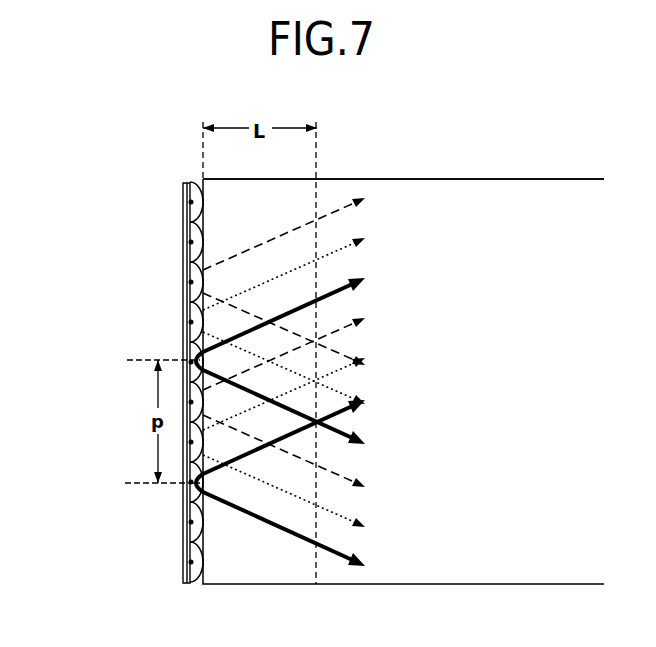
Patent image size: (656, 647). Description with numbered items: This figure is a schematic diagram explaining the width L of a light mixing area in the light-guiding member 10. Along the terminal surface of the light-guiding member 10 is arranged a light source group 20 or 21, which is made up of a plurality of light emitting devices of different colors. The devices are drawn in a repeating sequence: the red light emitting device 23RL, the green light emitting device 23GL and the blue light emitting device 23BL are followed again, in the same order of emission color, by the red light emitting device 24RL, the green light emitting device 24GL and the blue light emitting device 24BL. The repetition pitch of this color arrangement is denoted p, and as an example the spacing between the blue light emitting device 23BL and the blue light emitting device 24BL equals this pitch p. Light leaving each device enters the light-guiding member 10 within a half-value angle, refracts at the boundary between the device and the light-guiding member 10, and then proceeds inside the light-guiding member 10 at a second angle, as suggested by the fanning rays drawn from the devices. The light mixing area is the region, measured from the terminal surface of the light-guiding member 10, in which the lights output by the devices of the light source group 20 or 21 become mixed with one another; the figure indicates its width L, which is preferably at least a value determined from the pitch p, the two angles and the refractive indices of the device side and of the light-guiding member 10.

The light-guiding member 10 is at (495, 200).
The light source group 20 is at (157, 249).
The light source group 21 is at (241, 293).
The blue light emitting device 24BL is at (182, 353).
The green light emitting device 24GL is at (182, 403).
The red light emitting device 24RL is at (182, 484).
The blue light emitting device 23BL is at (182, 487).
The green light emitting device 23GL is at (182, 527).
The red light emitting device 23RL is at (182, 568).